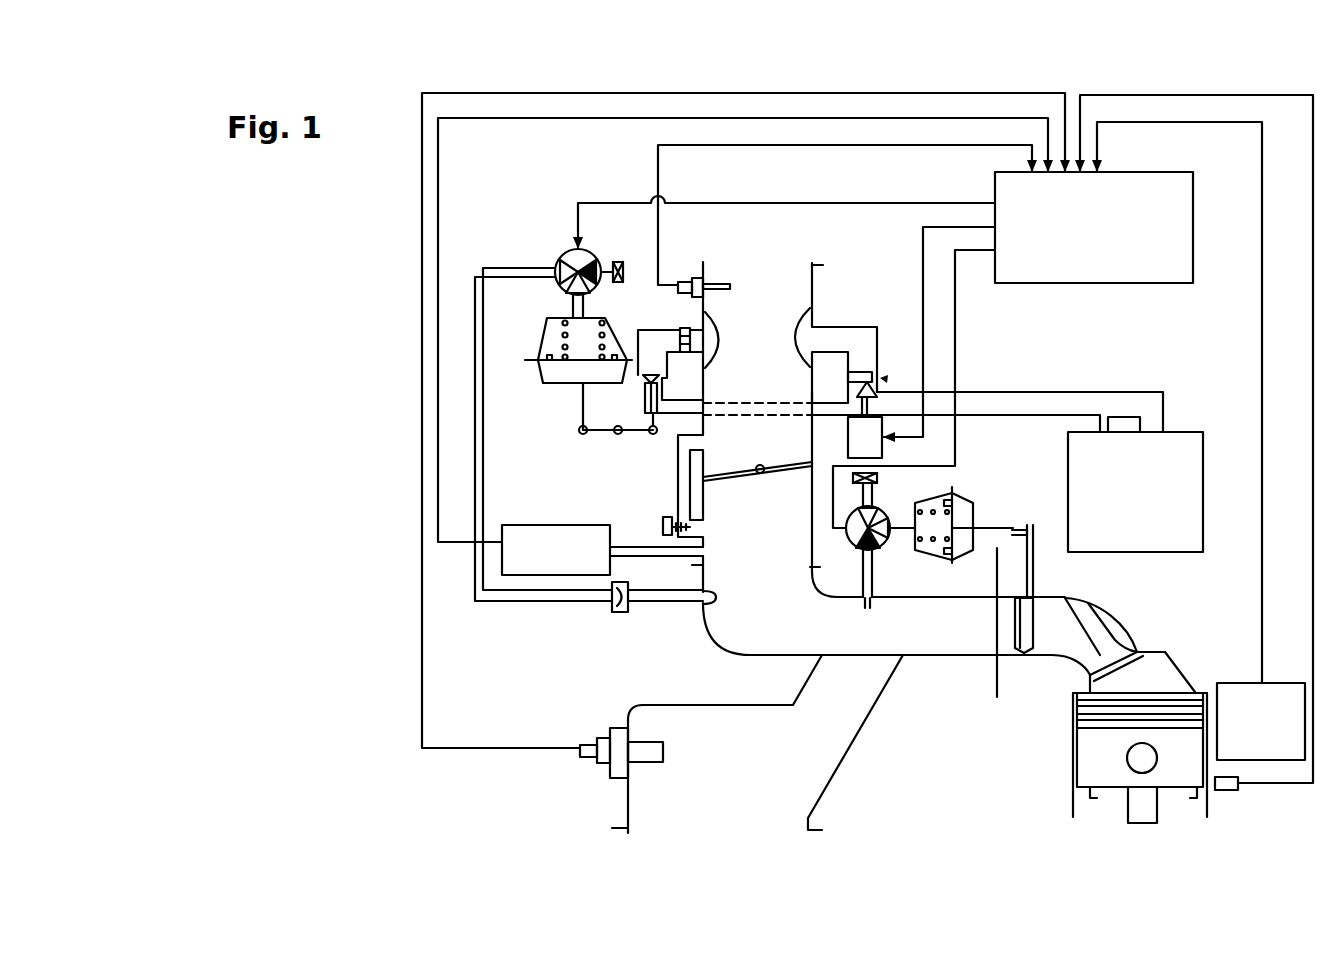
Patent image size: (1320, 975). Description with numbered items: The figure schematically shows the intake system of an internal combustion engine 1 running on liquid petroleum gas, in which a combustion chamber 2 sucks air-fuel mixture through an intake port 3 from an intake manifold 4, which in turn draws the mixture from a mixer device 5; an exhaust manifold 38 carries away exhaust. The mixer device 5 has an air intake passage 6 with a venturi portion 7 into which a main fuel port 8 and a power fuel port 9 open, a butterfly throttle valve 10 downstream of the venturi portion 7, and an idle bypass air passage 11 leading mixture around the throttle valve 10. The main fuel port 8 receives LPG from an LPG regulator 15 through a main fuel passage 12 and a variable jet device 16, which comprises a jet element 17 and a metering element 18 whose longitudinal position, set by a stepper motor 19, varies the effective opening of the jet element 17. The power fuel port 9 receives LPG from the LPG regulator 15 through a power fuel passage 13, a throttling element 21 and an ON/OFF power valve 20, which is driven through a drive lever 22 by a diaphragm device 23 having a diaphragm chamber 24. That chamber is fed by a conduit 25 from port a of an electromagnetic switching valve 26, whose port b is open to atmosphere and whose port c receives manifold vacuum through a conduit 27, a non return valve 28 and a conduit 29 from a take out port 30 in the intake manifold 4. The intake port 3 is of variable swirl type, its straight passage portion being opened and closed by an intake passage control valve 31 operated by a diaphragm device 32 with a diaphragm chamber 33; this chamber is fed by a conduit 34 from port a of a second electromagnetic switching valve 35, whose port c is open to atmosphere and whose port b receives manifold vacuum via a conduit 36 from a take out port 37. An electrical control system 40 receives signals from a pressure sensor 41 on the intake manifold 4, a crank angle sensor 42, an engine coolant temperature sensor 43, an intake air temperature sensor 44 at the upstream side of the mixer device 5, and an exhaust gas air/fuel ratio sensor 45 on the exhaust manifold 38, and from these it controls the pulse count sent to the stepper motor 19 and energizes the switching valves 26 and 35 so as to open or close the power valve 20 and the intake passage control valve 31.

The internal combustion engine 1 is at (1109, 758).
The combustion chamber 2 is at (1140, 667).
The intake port 3 is at (1107, 631).
The intake manifold 4 is at (858, 544).
The mixer device 5 is at (777, 427).
The air intake passage 6 is at (727, 446).
The venturi portion 7 is at (823, 330).
The main fuel port 8 is at (780, 360).
The power fuel port 9 is at (726, 331).
The throttle valve 10 is at (757, 491).
The idle bypass air passage 11 is at (668, 492).
The main fuel passage 12 is at (905, 361).
The power fuel passage 13 is at (587, 393).
The LPG regulator 15 is at (1029, 472).
The variable jet device 16 is at (938, 364).
The jet element 17 is at (881, 361).
The metering element 18 is at (887, 391).
The stepper motor 19 is at (848, 437).
The power valve 20 is at (607, 426).
The throttling element 21 is at (670, 355).
The drive lever 22 is at (650, 420).
The diaphragm device 23 is at (562, 350).
The diaphragm chamber 24 is at (615, 305).
The conduit 25 is at (555, 304).
The electromagnetic switching valve 26 is at (584, 257).
The conduit 27 is at (543, 414).
The non return valve 28 is at (614, 617).
The conduit 29 is at (665, 579).
The take out port 30 is at (690, 612).
The intake passage control valve 31 is at (1024, 612).
The diaphragm device 32 is at (939, 578).
The diaphragm chamber 33 is at (964, 520).
The conduit 34 is at (881, 519).
The electromagnetic switching valve 35 is at (832, 553).
The conduit 36 is at (885, 573).
The take out port 37 is at (870, 621).
The exhaust manifold 38 is at (757, 744).
The electrical control system 40 is at (1114, 227).
The pressure sensor 41 is at (601, 536).
The crank angle sensor 42 is at (1261, 705).
The engine coolant temperature sensor 43 is at (1236, 802).
The intake air temperature sensor 44 is at (697, 265).
The exhaust gas air/fuel ratio sensor 45 is at (621, 730).